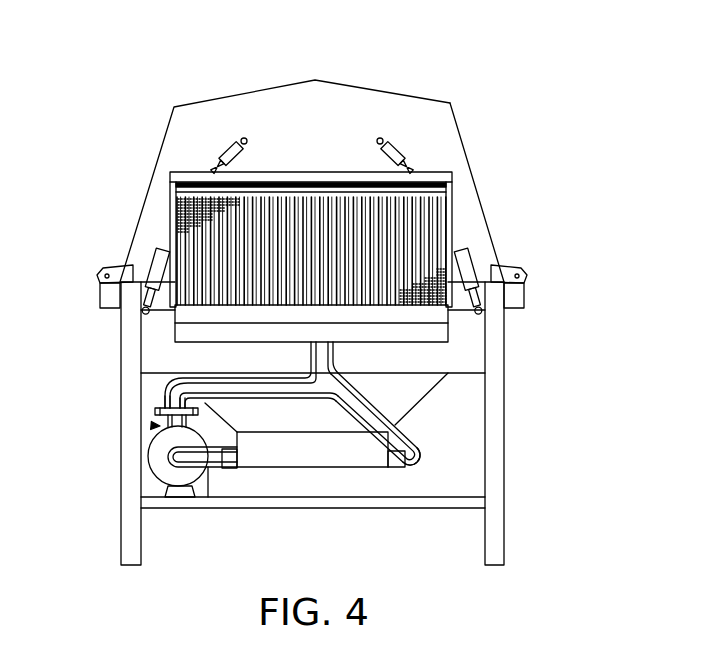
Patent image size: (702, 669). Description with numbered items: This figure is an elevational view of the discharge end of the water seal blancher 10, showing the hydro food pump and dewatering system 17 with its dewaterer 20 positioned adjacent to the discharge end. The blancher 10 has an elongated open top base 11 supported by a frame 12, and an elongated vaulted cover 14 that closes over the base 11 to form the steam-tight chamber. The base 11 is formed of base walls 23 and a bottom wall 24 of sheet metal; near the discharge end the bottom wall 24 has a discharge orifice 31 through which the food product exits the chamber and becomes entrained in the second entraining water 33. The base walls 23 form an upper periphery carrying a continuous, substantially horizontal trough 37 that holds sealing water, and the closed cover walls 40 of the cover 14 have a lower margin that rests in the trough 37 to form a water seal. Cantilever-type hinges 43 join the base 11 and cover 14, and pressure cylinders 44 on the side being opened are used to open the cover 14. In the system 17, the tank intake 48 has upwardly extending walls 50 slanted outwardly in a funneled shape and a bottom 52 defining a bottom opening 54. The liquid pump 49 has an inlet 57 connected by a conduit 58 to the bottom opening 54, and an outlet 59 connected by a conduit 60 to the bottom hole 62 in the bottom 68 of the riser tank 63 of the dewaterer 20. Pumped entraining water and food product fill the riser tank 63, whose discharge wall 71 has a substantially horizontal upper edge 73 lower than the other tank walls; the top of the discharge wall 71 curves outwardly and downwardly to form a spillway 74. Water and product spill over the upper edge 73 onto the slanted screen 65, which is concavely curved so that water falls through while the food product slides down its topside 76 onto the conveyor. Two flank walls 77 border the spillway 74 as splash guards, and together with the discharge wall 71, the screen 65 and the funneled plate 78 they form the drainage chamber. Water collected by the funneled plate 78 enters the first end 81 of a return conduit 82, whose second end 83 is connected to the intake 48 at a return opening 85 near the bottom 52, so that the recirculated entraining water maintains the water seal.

The water seal blancher 10 is at (352, 294).
The base 11 is at (352, 423).
The frame 12 is at (496, 452).
The cover 14 is at (457, 122).
The hydro food pump and dewatering system 17 is at (151, 425).
The dewaterer 20 is at (326, 236).
The base walls 23 is at (468, 365).
The bottom wall 24 is at (478, 378).
The discharge orifice 31 is at (448, 375).
The second entraining water 33 is at (359, 182).
The trough 37 is at (100, 300).
The closed cover walls 40 is at (314, 164).
The cantilever-type hinges 43 is at (112, 268).
The pressure cylinders 44 is at (215, 160).
The tank intake 48 is at (416, 445).
The liquid pump 49 is at (149, 460).
The upwardly extending walls 50 is at (220, 545).
The bottom 52 is at (337, 497).
The bottom opening 54 is at (240, 468).
The inlet 57 is at (166, 490).
The conduit 58 is at (208, 500).
The outlet 59 is at (157, 411).
The conduit 60 is at (164, 390).
The bottom hole 62 is at (308, 344).
The riser tank 63 is at (453, 224).
The slanted screen 65 is at (440, 203).
The bottom 68 is at (386, 411).
The discharge wall 71 is at (176, 194).
The upper edge 73 is at (263, 182).
The spillway 74 is at (198, 236).
The topside 76 is at (448, 302).
The flank walls 77 is at (160, 245).
The funneled plate 78 is at (204, 343).
The first end 81 is at (305, 340).
The return conduit 82 is at (346, 413).
The second end 83 is at (392, 468).
The return opening 85 is at (387, 470).